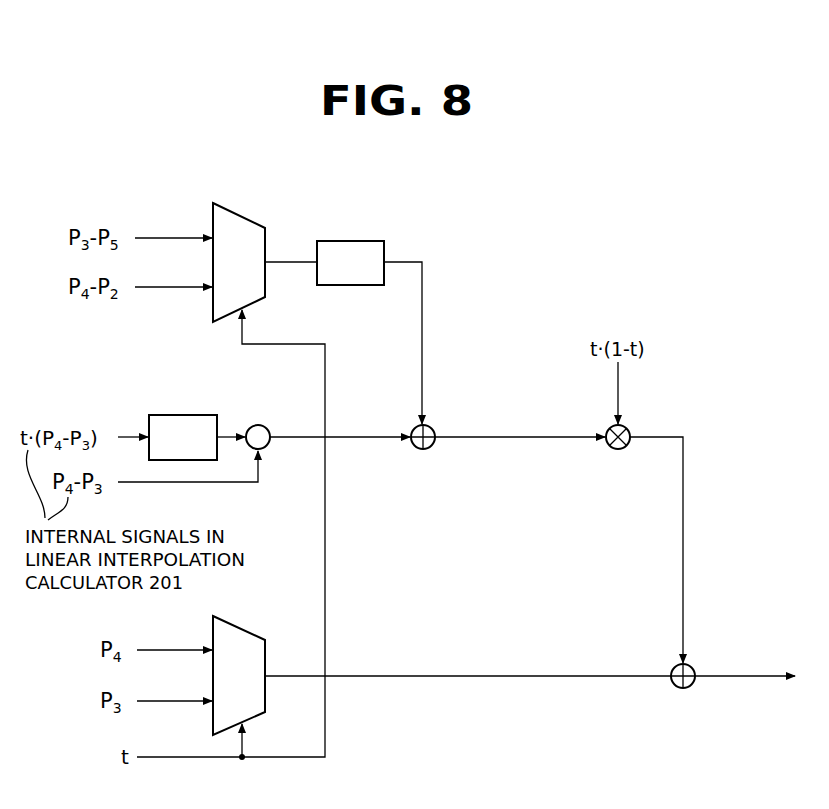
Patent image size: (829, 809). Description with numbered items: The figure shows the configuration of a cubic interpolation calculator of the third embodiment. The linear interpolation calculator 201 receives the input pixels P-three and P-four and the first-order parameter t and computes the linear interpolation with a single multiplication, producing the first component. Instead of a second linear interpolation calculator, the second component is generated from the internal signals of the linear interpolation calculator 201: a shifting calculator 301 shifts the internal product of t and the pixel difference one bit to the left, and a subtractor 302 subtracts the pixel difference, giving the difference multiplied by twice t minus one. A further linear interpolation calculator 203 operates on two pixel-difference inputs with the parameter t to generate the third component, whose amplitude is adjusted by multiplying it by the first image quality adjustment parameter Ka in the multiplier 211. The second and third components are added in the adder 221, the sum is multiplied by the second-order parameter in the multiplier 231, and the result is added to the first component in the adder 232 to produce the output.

The linear interpolation calculator 201 is at (247, 626).
The linear interpolation calculator 203 is at (247, 214).
The multiplier 211 is at (367, 241).
The adder 221 is at (423, 449).
The multiplier 231 is at (627, 430).
The adder 232 is at (692, 668).
The shifting calculator 301 is at (183, 415).
The subtractor 302 is at (266, 428).